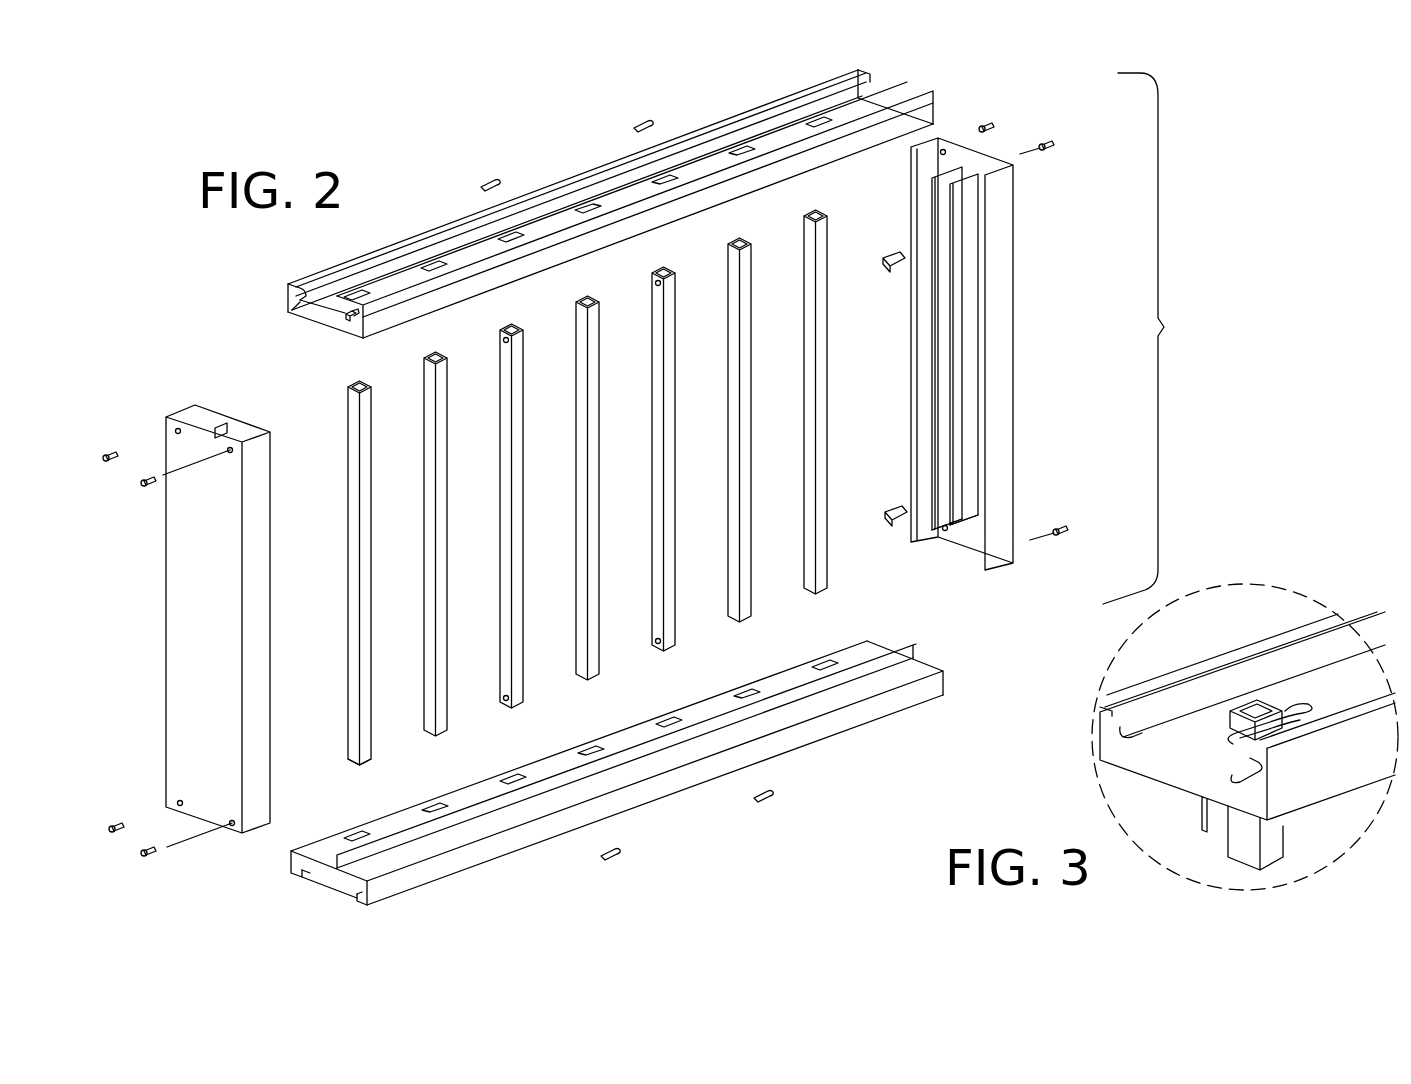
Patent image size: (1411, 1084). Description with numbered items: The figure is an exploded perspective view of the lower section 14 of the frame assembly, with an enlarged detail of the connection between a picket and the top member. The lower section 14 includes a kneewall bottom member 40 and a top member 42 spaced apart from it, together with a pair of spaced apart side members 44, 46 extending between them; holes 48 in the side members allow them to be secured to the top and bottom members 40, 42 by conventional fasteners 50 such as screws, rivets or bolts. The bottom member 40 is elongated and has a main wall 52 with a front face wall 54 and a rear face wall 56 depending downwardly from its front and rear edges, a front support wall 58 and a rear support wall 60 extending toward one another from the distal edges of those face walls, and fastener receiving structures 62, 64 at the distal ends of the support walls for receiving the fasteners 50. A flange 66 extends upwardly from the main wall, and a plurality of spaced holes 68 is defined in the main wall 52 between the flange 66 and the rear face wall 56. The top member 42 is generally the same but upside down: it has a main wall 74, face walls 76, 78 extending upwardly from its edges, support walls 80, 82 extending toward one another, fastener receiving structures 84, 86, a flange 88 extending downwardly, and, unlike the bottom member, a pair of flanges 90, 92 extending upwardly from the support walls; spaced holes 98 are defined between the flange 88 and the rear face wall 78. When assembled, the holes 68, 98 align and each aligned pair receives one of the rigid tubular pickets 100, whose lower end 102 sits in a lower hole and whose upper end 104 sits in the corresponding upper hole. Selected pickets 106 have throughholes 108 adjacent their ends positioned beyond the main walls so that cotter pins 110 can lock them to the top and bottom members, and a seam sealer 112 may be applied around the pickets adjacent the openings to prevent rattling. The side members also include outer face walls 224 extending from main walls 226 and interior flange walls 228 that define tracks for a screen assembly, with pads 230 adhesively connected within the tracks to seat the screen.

In FIG. 2, the lower section 14 is at (1150, 338).
In FIG. 2, the bottom member 40 is at (600, 788).
In FIG. 2, the top member 42 is at (566, 232).
In FIG. 2, the side member 44 is at (178, 615).
In FIG. 2, the side member 46 is at (970, 364).
In FIG. 2, the holes 48 is at (175, 431).
In FIG. 2, the fasteners 50 is at (111, 462).
In FIG. 2, the main wall 52 is at (335, 872).
In FIG. 2, the front face wall 54 is at (370, 888).
In FIG. 2, the rear face wall 56 is at (290, 862).
In FIG. 2, the front support wall 58 is at (360, 897).
In FIG. 2, the rear support wall 60 is at (298, 875).
In FIG. 2, the fastener receiving structure 62 is at (348, 893).
In FIG. 2, the fastener receiving structure 64 is at (312, 880).
In FIG. 2, the flange 66 is at (345, 852).
In FIG. 2, the holes 68 is at (515, 773).
In FIG. 2, the main wall 74 is at (335, 332).
In FIG. 3, the main wall 74 is at (1190, 788).
In FIG. 2, the face wall 76 is at (512, 277).
In FIG. 2, the face wall 78 is at (287, 296).
In FIG. 2, the support wall 80 is at (357, 316).
In FIG. 2, the support wall 82 is at (302, 282).
In FIG. 2, the fastener receiving structure 84 is at (350, 318).
In FIG. 2, the fastener receiving structure 86 is at (313, 290).
In FIG. 2, the flange 88 is at (338, 342).
In FIG. 2, the flange 90 is at (400, 300).
In FIG. 2, the flange 92 is at (440, 228).
In FIG. 2, the holes 98 is at (805, 118).
In FIG. 2, the pickets 100 is at (328, 573).
In FIG. 2, the lower end 102 is at (356, 750).
In FIG. 2, the upper end 104 is at (347, 400).
In FIG. 3, the upper end 104 is at (1228, 670).
In FIG. 2, the selected pickets 106 is at (680, 610).
In FIG. 3, the selected pickets 106 is at (1272, 845).
In FIG. 2, the throughholes 108 is at (656, 287).
In FIG. 3, the throughholes 108 is at (1250, 705).
In FIG. 2, the cotter pins 110 is at (645, 122).
In FIG. 3, the cotter pins 110 is at (1305, 710).
In FIG. 3, the seam sealer 112 is at (1228, 737).
In FIG. 2, the outer face walls 224 is at (911, 405).
In FIG. 2, the main walls 226 is at (980, 160).
In FIG. 2, the interior flange walls 228 is at (935, 522).
In FIG. 2, the pads 230 is at (890, 270).